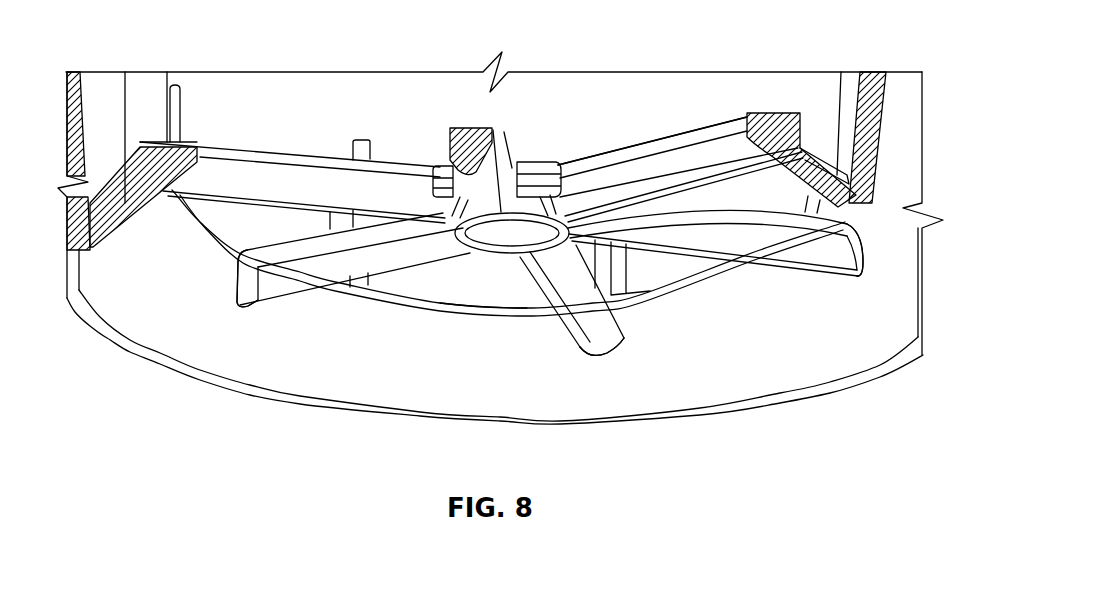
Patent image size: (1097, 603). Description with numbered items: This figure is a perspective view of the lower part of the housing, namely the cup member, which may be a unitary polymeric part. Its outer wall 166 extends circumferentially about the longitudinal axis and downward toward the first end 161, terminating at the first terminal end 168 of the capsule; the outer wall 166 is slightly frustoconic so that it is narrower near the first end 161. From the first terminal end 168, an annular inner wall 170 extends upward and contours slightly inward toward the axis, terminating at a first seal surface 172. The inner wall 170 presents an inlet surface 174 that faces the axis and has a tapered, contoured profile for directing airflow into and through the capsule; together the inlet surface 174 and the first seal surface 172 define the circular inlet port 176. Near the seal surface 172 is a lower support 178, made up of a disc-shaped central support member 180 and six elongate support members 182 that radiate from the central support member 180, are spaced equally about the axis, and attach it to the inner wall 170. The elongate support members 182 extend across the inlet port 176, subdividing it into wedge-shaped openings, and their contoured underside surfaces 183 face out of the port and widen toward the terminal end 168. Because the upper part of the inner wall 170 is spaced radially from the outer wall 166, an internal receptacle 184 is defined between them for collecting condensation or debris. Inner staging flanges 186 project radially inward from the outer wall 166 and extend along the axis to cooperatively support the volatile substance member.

The first end 161 is at (883, 370).
The outer wall 166 is at (873, 88).
The first terminal end 168 is at (267, 397).
The inner wall 170 is at (763, 120).
The first seal surface 172 is at (187, 140).
The inlet surface 174 is at (496, 373).
The inlet port 176 is at (436, 269).
The lower support 178 is at (613, 164).
The central support member 180 is at (530, 165).
The elongate support members 182 is at (260, 170).
The underside surfaces 183 is at (700, 228).
The internal receptacle 184 is at (817, 133).
The inner staging flanges 186 is at (353, 140).